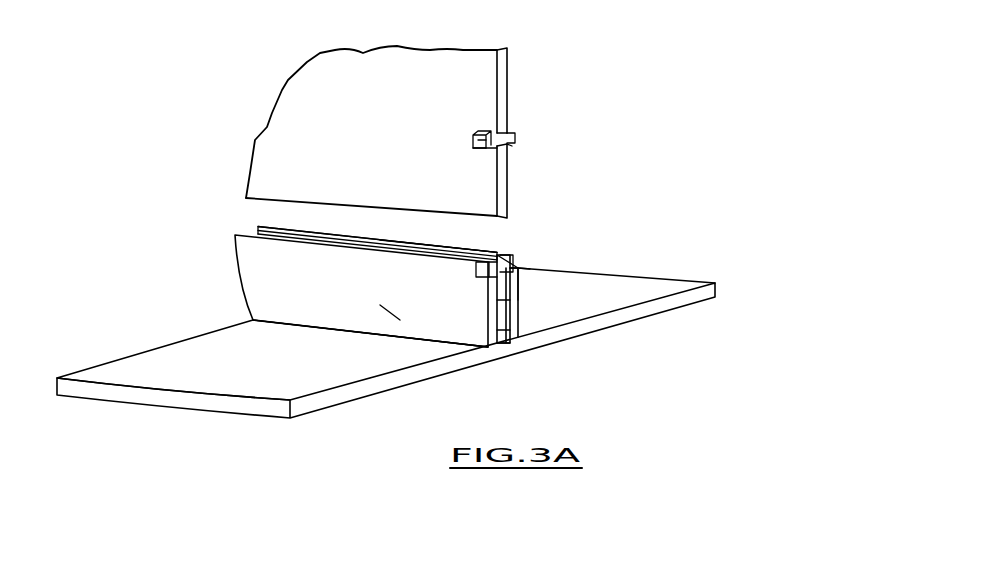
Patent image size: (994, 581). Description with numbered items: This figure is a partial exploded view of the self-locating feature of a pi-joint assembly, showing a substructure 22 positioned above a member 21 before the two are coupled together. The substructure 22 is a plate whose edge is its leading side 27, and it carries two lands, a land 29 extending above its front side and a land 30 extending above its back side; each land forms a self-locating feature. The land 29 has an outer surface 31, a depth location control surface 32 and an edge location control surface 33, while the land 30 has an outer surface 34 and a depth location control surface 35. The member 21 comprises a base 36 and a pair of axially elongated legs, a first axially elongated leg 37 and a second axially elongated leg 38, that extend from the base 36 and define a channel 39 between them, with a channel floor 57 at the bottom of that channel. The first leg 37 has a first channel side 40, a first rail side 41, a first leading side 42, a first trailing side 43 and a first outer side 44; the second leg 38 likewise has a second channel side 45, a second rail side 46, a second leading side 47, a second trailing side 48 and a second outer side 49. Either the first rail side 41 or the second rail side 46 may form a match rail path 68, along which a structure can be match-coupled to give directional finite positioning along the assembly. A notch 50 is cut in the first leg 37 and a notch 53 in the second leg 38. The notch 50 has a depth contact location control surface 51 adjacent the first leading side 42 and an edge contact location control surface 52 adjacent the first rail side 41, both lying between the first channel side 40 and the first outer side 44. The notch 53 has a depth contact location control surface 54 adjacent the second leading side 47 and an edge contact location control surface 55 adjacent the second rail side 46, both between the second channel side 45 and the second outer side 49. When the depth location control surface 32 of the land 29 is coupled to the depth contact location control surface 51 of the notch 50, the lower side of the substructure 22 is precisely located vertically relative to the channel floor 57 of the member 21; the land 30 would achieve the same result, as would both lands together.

The member 21 is at (197, 346).
The substructure 22 is at (422, 62).
The leading side 27 is at (504, 58).
The land 29 is at (488, 130).
The land 30 is at (515, 134).
The outer surface 31 is at (486, 152).
The depth location control surface 32 is at (478, 149).
The edge location control surface 33 is at (474, 138).
The outer surface 34 is at (516, 137).
The depth location control surface 35 is at (514, 146).
The base 36 is at (120, 372).
The first axially elongated leg 37 is at (397, 312).
The second axially elongated leg 38 is at (512, 330).
The channel 39 is at (225, 228).
The first channel side 40 is at (502, 311).
The first rail side 41 is at (341, 244).
The first leading side 42 is at (500, 345).
The first trailing side 43 is at (233, 262).
The first outer side 44 is at (335, 326).
The second channel side 45 is at (612, 302).
The second rail side 46 is at (376, 246).
The second leading side 47 is at (518, 272).
The second trailing side 48 is at (258, 232).
The second outer side 49 is at (287, 230).
The notch 50 is at (480, 273).
The depth contact location control surface 51 is at (485, 278).
The edge contact location control surface 52 is at (474, 268).
The notch 53 is at (538, 244).
The depth contact location control surface 54 is at (523, 264).
The edge contact location control surface 55 is at (514, 258).
The channel floor 57 is at (503, 342).
The match rail path 68 is at (320, 262).